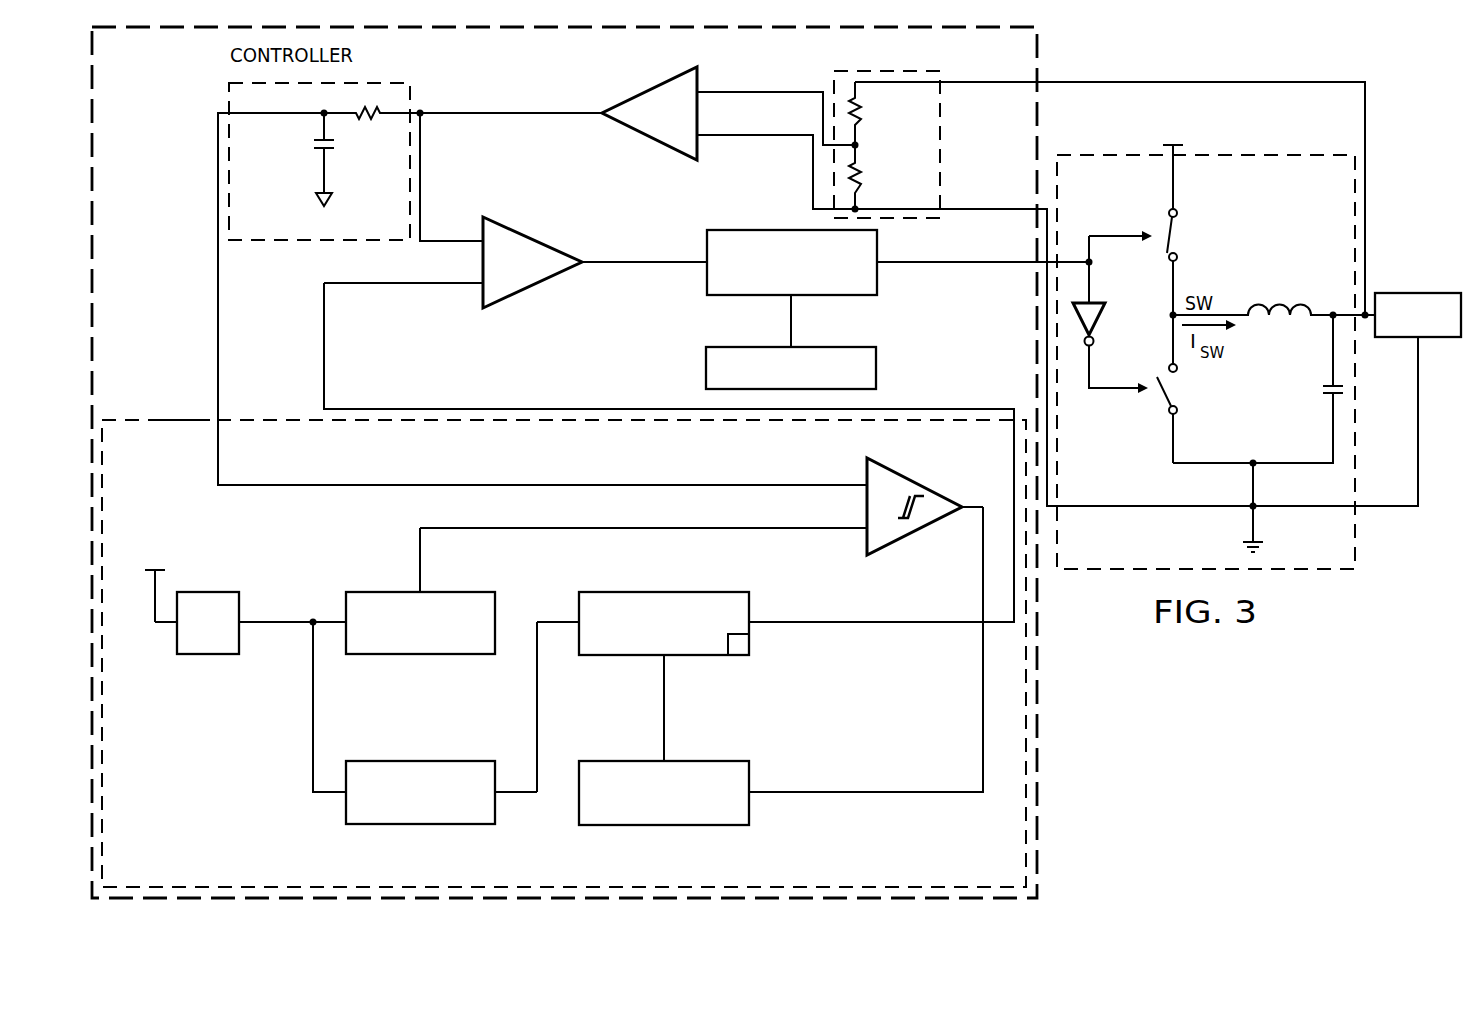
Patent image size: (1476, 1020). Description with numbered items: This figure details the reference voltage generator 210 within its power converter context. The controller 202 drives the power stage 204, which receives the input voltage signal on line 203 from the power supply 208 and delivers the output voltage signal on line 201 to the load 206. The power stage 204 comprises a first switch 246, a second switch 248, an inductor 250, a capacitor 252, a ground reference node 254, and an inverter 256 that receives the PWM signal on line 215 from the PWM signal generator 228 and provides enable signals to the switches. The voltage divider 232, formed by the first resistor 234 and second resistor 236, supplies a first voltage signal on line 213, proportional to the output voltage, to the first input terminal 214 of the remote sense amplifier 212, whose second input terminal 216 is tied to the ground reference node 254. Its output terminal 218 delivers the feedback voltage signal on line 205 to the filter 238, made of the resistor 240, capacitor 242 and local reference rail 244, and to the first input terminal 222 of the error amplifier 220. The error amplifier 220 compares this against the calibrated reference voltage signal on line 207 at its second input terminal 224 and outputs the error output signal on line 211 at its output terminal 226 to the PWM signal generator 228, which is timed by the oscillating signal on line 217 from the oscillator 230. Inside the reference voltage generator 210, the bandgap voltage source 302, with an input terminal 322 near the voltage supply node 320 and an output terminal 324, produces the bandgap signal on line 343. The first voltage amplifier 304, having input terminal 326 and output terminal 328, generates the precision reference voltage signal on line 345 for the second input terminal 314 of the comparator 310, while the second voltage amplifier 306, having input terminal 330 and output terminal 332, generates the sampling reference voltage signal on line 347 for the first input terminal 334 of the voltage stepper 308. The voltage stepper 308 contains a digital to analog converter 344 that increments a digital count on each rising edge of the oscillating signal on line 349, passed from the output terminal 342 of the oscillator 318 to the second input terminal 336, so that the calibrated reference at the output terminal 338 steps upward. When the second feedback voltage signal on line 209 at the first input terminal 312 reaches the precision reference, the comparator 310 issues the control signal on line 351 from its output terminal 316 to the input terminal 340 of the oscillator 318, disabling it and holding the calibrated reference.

The output voltage signal line 201 is at (1366, 230).
The controller 202 is at (1026, 664).
The input voltage signal line 203 is at (1174, 193).
The power stage 204 is at (1245, 156).
The feedback voltage signal line 205 is at (472, 116).
The load 206 is at (1430, 292).
The calibrated reference voltage signal line 207 is at (324, 352).
The power supply 208 is at (1176, 144).
The second feedback voltage signal line 209 is at (218, 240).
The reference voltage generator 210 is at (181, 421).
The error output signal line 211 is at (692, 262).
The remote sense amplifier 212 is at (648, 88).
The first voltage signal line 213 is at (771, 92).
The first input terminal 214 is at (704, 92).
The PWM signal line 215 is at (893, 264).
The second input terminal 216 is at (705, 136).
The oscillating signal line 217 is at (791, 312).
The output terminal 218 is at (590, 113).
The error amplifier 220 is at (544, 240).
The first input terminal 222 is at (468, 240).
The second input terminal 224 is at (474, 284).
The output terminal 226 is at (594, 262).
The PWM signal generator 228 is at (782, 230).
The oscillator 230 is at (706, 367).
The voltage divider 232 is at (939, 133).
The first resistor 234 is at (861, 110).
The second resistor 236 is at (861, 178).
The filter 238 is at (279, 241).
The resistor 240 is at (369, 120).
The capacitor 242 is at (314, 143).
The local reference rail 244 is at (318, 201).
The first switch 246 is at (1172, 235).
The second switch 248 is at (1166, 388).
The inductor 250 is at (1281, 297).
The capacitor 252 is at (1323, 388).
The ground reference node 254 is at (1258, 514).
The inverter 256 is at (1104, 317).
The bandgap voltage source 302 is at (210, 656).
The first voltage amplifier 304 is at (400, 656).
The second voltage amplifier 306 is at (420, 826).
The voltage stepper 308 is at (650, 591).
The comparator 310 is at (917, 535).
The first input terminal 312 is at (855, 484).
The second input terminal 314 is at (855, 530).
The output terminal 316 is at (972, 506).
The oscillator 318 is at (655, 826).
The voltage supply node 320 is at (153, 568).
The input terminal 322 is at (165, 624).
The output terminal 324 is at (250, 621).
The input terminal 326 is at (330, 621).
The output terminal 328 is at (420, 578).
The input terminal 330 is at (334, 794).
The output terminal 332 is at (510, 794).
The first input terminal 334 is at (566, 621).
The second input terminal 336 is at (664, 666).
The output terminal 338 is at (762, 621).
The input terminal 340 is at (762, 793).
The output terminal 342 is at (664, 750).
The bandgap signal line 343 is at (285, 624).
The digital to analog converter 344 is at (750, 645).
The precision reference voltage signal line 345 is at (496, 530).
The sampling reference voltage signal line 347 is at (538, 712).
The oscillating signal line 349 is at (664, 708).
The control signal line 351 is at (866, 793).